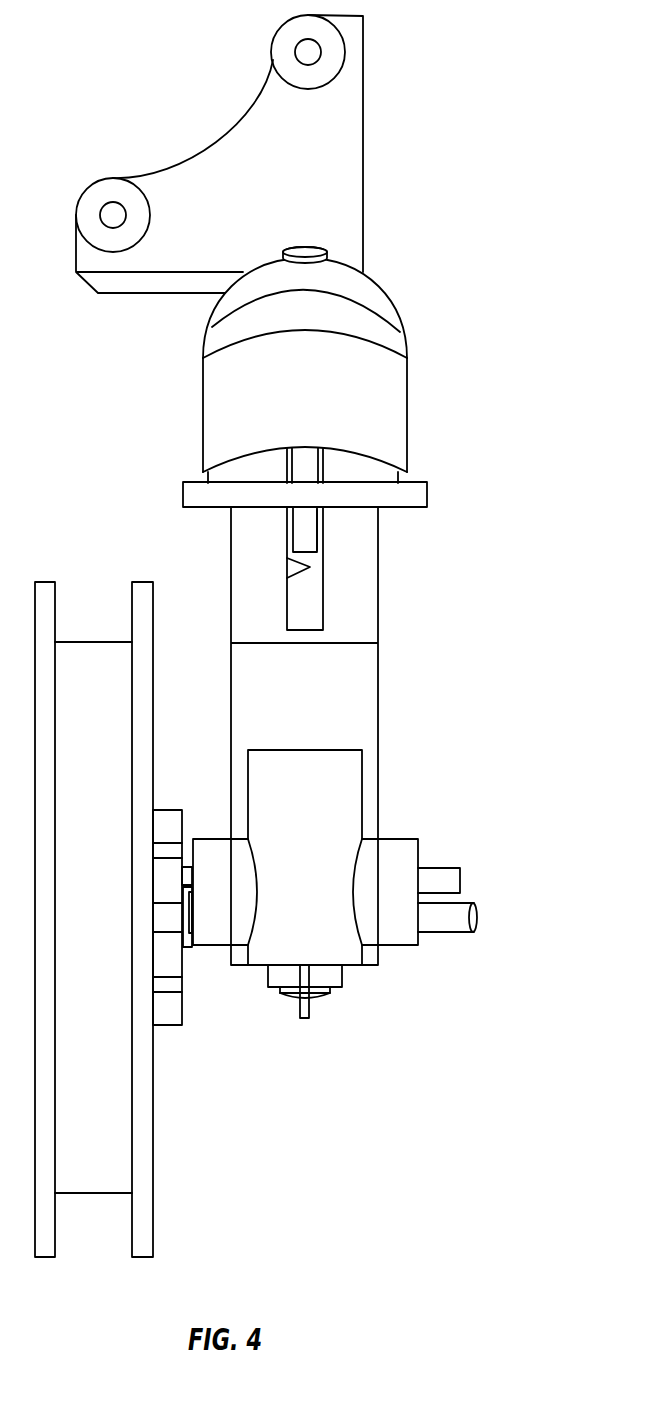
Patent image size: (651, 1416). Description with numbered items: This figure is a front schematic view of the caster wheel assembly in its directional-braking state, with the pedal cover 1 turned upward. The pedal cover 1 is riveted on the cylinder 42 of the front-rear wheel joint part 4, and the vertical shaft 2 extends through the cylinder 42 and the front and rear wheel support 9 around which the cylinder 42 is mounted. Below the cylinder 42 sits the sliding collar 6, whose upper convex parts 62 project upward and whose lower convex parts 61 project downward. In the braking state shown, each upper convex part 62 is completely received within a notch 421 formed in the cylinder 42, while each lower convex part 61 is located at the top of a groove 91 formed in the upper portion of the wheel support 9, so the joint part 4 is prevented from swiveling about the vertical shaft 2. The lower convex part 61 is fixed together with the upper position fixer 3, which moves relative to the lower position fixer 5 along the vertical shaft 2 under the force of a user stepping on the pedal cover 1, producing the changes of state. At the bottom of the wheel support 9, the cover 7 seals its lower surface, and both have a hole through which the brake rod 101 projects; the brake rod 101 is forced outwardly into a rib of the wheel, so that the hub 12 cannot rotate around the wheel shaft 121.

The pedal cover 1 is at (392, 345).
The vertical shaft 2 is at (305, 252).
The upper position fixer 3 is at (310, 560).
The front-rear wheel joint part 4 is at (347, 103).
The lower position fixer 5 is at (307, 608).
The sliding collar 6 is at (188, 495).
The cover 7 is at (305, 1005).
The front & rear wheel support 9 is at (365, 705).
The hub 12 is at (80, 1183).
The cylinder 42 is at (392, 473).
The lower convex part 61 is at (305, 535).
The upper convex part 62 is at (308, 477).
The groove 91 is at (318, 537).
The brake rod 101 is at (448, 878).
The wheel shaft 121 is at (448, 927).
The notch 421 is at (323, 452).